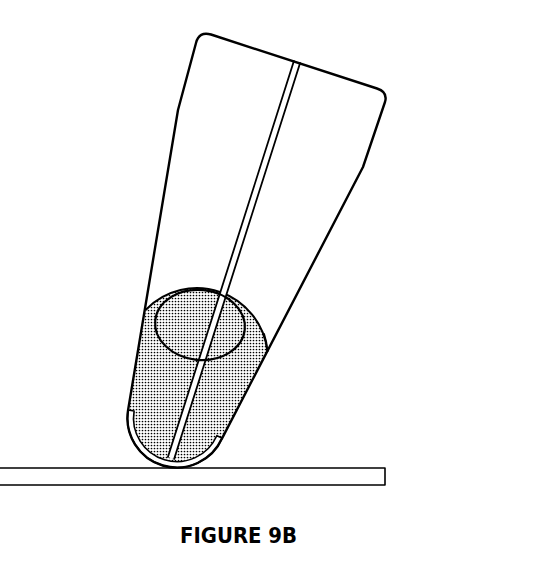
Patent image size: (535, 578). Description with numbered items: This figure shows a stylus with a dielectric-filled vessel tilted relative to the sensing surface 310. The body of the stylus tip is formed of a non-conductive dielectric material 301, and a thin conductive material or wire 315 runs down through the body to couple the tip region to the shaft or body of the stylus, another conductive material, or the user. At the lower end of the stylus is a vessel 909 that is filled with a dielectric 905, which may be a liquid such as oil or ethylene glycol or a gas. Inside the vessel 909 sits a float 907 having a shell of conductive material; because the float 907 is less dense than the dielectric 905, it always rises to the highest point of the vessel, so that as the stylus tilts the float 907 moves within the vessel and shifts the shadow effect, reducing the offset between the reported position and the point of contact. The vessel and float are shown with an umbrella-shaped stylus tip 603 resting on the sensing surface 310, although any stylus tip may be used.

The non-conductive dielectric material 301 is at (197, 151).
The thin conductive material or wire 315 is at (267, 153).
The dielectric 905 is at (140, 363).
The float 907 is at (153, 327).
The vessel 909 is at (266, 329).
The umbrella-shaped stylus tip 603 is at (128, 428).
The sensing surface 310 is at (370, 477).